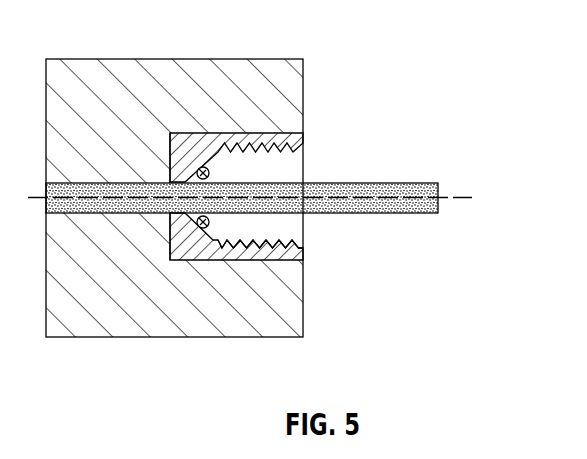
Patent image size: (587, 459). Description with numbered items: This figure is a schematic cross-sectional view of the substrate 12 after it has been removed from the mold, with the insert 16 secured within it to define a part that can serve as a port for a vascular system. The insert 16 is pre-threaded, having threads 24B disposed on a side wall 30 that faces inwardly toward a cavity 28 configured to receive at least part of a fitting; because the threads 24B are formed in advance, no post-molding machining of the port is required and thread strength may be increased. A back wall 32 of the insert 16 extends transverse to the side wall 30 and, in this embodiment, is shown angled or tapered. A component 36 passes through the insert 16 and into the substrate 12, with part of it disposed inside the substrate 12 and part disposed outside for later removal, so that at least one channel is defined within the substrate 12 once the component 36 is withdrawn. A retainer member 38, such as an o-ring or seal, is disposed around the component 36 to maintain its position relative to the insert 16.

The substrate 12 is at (160, 66).
The insert 16 is at (198, 135).
The threads 24B is at (304, 239).
The cavity 28 is at (284, 171).
The side wall 30 is at (304, 252).
The back wall 32 is at (183, 233).
The component 36 is at (417, 183).
The retainer member 38 is at (209, 173).